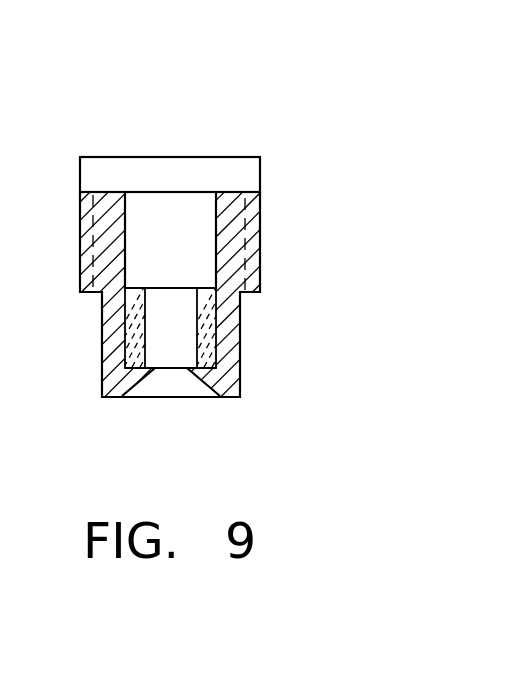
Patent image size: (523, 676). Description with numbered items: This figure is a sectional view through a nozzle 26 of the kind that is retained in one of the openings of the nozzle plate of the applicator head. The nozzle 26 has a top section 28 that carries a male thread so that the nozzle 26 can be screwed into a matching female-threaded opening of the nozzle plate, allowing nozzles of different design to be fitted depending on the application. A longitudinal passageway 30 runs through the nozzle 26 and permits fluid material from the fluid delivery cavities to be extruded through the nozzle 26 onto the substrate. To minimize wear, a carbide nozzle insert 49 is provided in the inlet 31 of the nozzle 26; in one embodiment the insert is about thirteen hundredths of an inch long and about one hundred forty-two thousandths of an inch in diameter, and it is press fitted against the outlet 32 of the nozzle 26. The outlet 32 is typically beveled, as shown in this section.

The nozzle 26 is at (278, 60).
The top section 28 is at (260, 201).
The inlet 31 is at (162, 192).
The passageway 30 is at (190, 266).
The carbide nozzle insert 49 is at (202, 334).
The outlet 32 is at (127, 372).